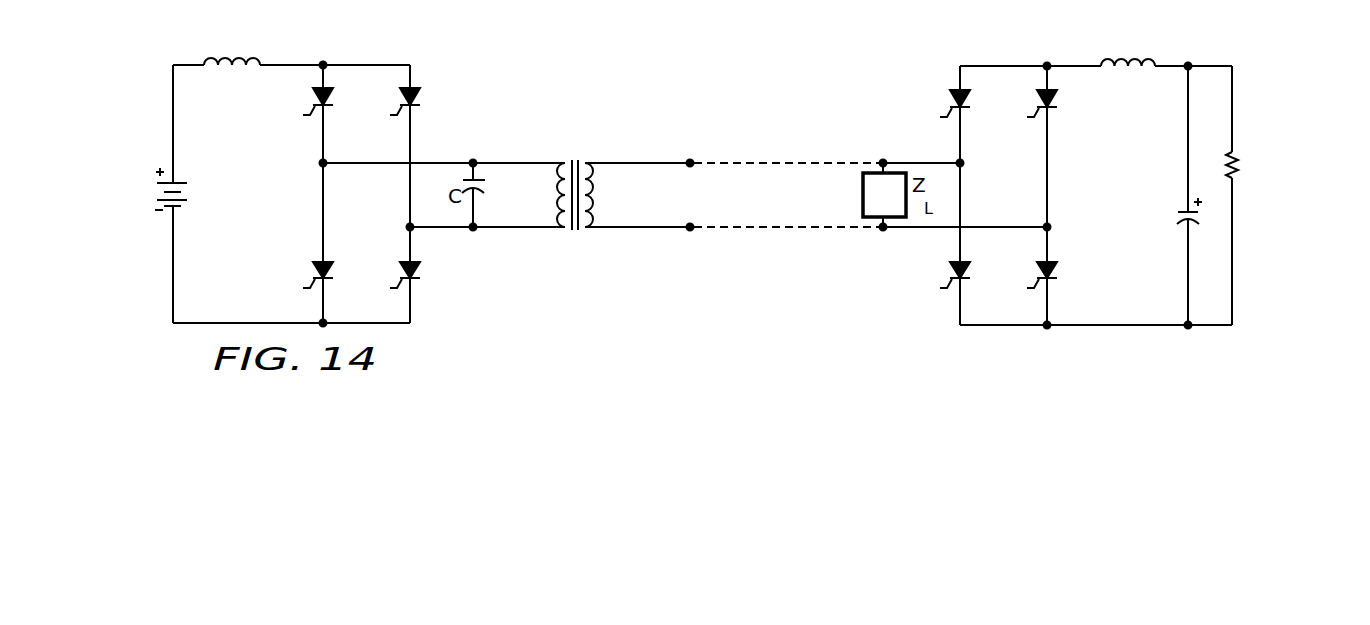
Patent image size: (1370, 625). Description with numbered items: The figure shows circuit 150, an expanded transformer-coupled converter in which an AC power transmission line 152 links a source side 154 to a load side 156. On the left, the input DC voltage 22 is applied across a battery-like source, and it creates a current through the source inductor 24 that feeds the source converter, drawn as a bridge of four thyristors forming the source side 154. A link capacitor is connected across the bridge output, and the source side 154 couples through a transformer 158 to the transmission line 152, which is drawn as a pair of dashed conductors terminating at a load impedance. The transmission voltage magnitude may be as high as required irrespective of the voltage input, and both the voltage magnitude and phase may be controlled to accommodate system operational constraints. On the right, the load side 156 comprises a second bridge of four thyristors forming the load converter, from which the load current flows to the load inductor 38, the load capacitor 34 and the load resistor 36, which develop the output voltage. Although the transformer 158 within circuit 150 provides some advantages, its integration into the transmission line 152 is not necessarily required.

The input DC voltage V1 22 is at (143, 203).
The source inductor LS 24 is at (206, 41).
The source side 154 is at (427, 83).
The transformer 158 is at (593, 143).
The AC power transmission line 152 is at (803, 147).
The circuit 150 is at (1104, 164).
The load side 156 is at (930, 80).
The load inductor LL 38 is at (1157, 43).
The load resistor R 36 is at (1243, 162).
The load capacitor CL 34 is at (1160, 228).